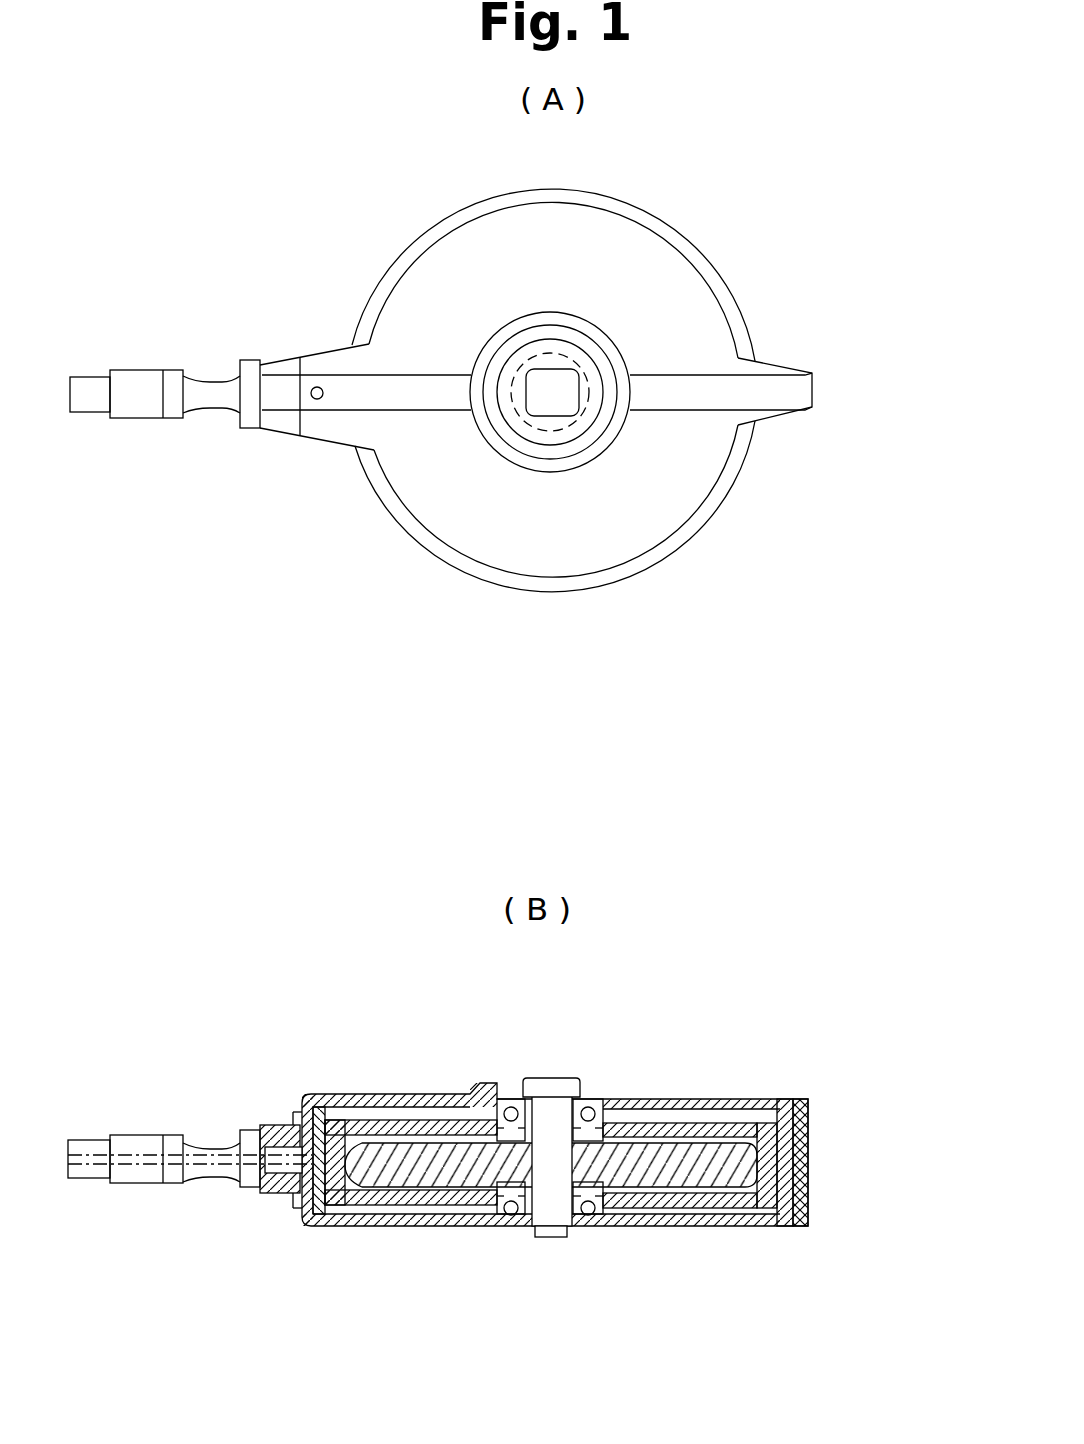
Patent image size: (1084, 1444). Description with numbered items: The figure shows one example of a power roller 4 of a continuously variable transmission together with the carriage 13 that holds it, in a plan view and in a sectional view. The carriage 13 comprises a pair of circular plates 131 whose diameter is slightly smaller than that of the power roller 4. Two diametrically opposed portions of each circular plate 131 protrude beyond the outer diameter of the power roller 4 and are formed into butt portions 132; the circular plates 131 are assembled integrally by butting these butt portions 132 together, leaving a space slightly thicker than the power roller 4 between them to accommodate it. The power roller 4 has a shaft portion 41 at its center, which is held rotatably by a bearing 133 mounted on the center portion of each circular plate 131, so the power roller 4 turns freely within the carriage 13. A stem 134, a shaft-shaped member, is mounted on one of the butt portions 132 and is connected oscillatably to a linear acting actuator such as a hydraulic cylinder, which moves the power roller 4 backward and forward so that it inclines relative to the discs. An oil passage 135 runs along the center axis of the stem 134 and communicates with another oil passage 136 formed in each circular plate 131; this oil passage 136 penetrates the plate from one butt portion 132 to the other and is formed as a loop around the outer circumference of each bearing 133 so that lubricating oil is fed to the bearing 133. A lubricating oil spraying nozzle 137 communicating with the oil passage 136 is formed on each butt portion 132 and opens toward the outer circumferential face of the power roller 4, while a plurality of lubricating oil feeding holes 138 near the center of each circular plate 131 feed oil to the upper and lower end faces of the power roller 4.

The power roller 4 is at (443, 557).
The carriage 13 is at (393, 500).
The shaft portion 41 is at (558, 388).
The circular plate 131 is at (642, 518).
The butt portion 132 is at (323, 343).
The bearing 133 is at (593, 1095).
The stem 134 is at (135, 1145).
The oil passage 135 is at (208, 1162).
The oil passage 136 is at (340, 1112).
The lubricating oil spraying nozzle 137 is at (342, 1185).
The lubricating oil feeding hole 138 is at (452, 1150).